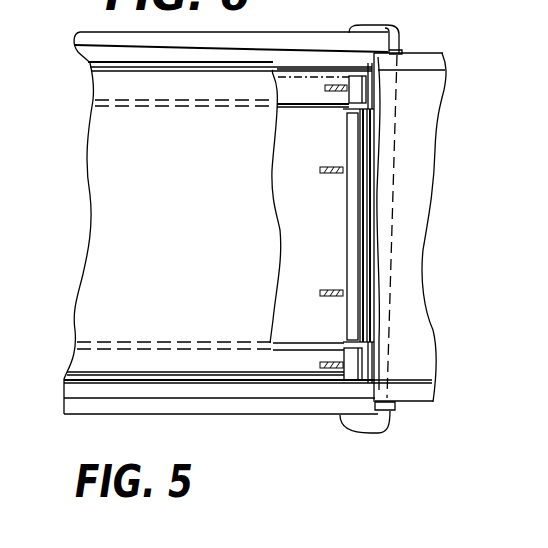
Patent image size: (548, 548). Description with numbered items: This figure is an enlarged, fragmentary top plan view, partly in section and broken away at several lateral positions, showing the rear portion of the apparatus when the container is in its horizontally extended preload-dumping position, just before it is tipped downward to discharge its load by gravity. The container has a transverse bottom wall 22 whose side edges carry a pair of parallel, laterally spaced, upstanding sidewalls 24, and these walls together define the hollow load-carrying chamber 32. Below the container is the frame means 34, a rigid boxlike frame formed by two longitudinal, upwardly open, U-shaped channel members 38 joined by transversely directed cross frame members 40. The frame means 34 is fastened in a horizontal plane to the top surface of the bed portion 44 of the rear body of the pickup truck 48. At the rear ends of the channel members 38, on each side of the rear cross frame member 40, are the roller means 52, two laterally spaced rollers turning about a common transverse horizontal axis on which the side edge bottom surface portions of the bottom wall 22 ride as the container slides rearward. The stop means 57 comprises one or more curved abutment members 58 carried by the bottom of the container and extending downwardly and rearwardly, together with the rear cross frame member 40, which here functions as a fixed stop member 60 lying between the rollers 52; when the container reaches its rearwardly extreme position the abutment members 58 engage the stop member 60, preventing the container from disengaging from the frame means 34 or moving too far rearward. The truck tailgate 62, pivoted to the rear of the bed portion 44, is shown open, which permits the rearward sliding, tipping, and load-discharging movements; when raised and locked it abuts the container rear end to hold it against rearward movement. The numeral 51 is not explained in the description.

The bottom wall 22 is at (103, 197).
The sidewalls 24 is at (229, 72).
The chamber 32 is at (211, 222).
The frame means 34 is at (243, 118).
The channel members 38 is at (274, 86).
The cross frame member 40 is at (354, 219).
The bed portion 44 is at (304, 247).
The pickup truck 48 is at (293, 26).
The pin 51 is at (338, 279).
The roller means 52 is at (341, 103).
The stop means 57 is at (338, 77).
The curved abutment members 58 is at (325, 88).
The fixed stop member 60 is at (380, 187).
The tailgate 62 is at (433, 64).